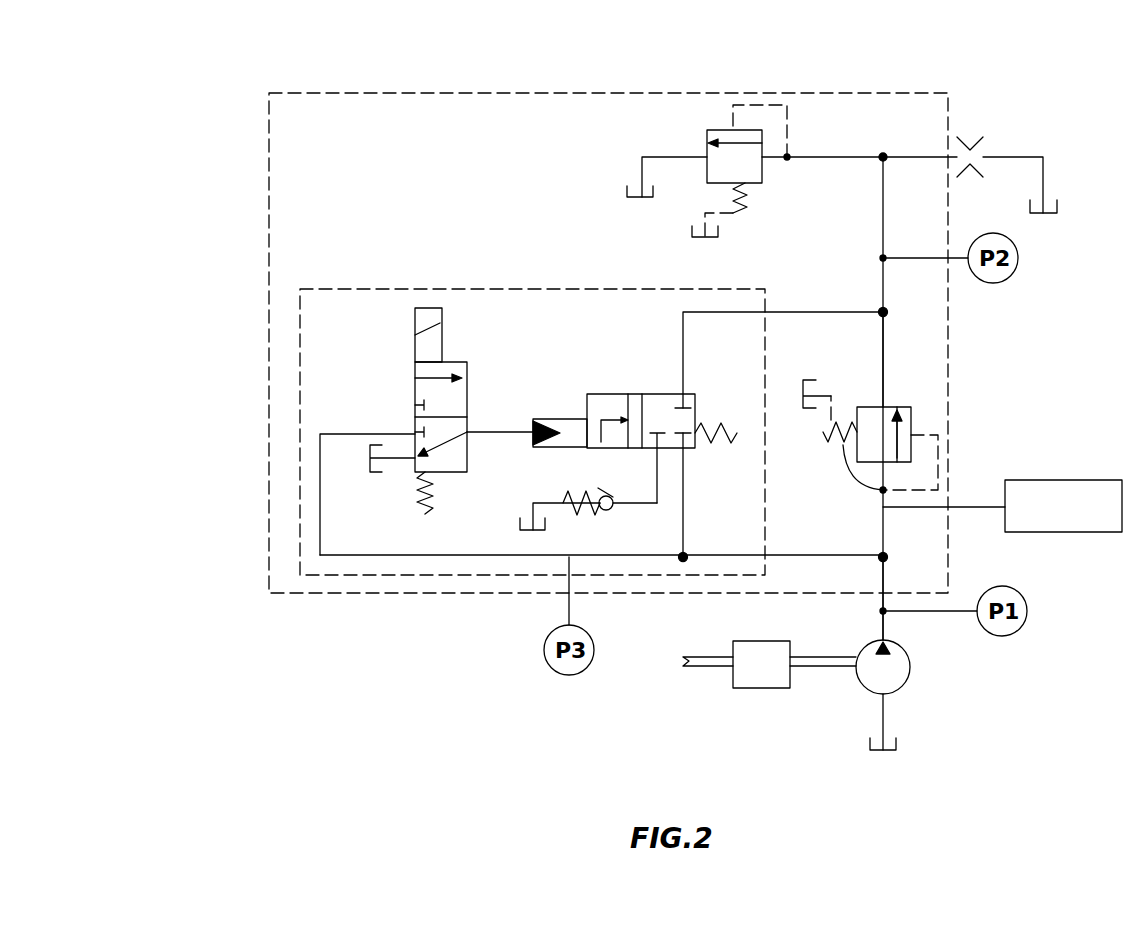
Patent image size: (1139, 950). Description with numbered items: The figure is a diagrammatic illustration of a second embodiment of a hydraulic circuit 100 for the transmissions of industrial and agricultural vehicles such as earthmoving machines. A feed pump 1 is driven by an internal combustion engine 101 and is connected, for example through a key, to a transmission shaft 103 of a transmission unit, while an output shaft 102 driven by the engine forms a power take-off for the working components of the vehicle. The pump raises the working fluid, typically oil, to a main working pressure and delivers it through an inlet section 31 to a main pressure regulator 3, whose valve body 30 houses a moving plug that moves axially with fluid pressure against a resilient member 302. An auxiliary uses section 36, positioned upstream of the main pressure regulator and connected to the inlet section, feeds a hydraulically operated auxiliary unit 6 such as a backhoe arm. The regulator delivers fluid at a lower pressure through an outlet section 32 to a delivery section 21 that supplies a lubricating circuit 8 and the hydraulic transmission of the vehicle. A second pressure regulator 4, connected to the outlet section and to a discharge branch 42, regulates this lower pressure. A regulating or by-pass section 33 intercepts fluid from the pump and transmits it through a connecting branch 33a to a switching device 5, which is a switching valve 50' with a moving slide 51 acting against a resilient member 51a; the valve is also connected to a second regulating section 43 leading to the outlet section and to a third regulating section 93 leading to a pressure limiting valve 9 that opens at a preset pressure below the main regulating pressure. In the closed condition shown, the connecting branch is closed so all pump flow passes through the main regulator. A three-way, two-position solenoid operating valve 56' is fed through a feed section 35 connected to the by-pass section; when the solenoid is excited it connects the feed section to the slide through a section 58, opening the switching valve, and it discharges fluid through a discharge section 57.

The hydraulic circuit 100 is at (197, 163).
The switching device 5 is at (300, 313).
The second pressure regulator 4 is at (725, 130).
The discharge branch 42 is at (668, 157).
The second regulating section 43 is at (710, 312).
The delivery section 21 is at (920, 157).
The lubricating circuit 8 is at (1000, 157).
The outlet section 32 is at (883, 350).
The valve body 30 is at (897, 407).
The main pressure regulator 3 is at (911, 425).
The resilient member 302 is at (883, 490).
The auxiliary uses section 36 is at (975, 507).
The hydraulically operated auxiliary unit 6 is at (1083, 480).
The inlet section 31 is at (883, 535).
The feed pump 1 is at (910, 678).
The internal combustion engine 101 is at (763, 690).
The output shaft 102 is at (693, 668).
The transmission shaft 103 is at (830, 668).
The regulating or by-pass section 33 is at (713, 557).
The connecting branch 33a is at (687, 503).
The three-way and two-position operating valve 56' is at (331, 411).
The discharge section 57 is at (390, 460).
The feed section 35 is at (385, 556).
The section 58 is at (497, 432).
The moving slide 51 is at (605, 445).
The resilient member 51a is at (605, 394).
The return spring of valve 51 50' is at (605, 319).
The pressure limiting valve 9 is at (567, 512).
The third regulating section 93 is at (620, 505).